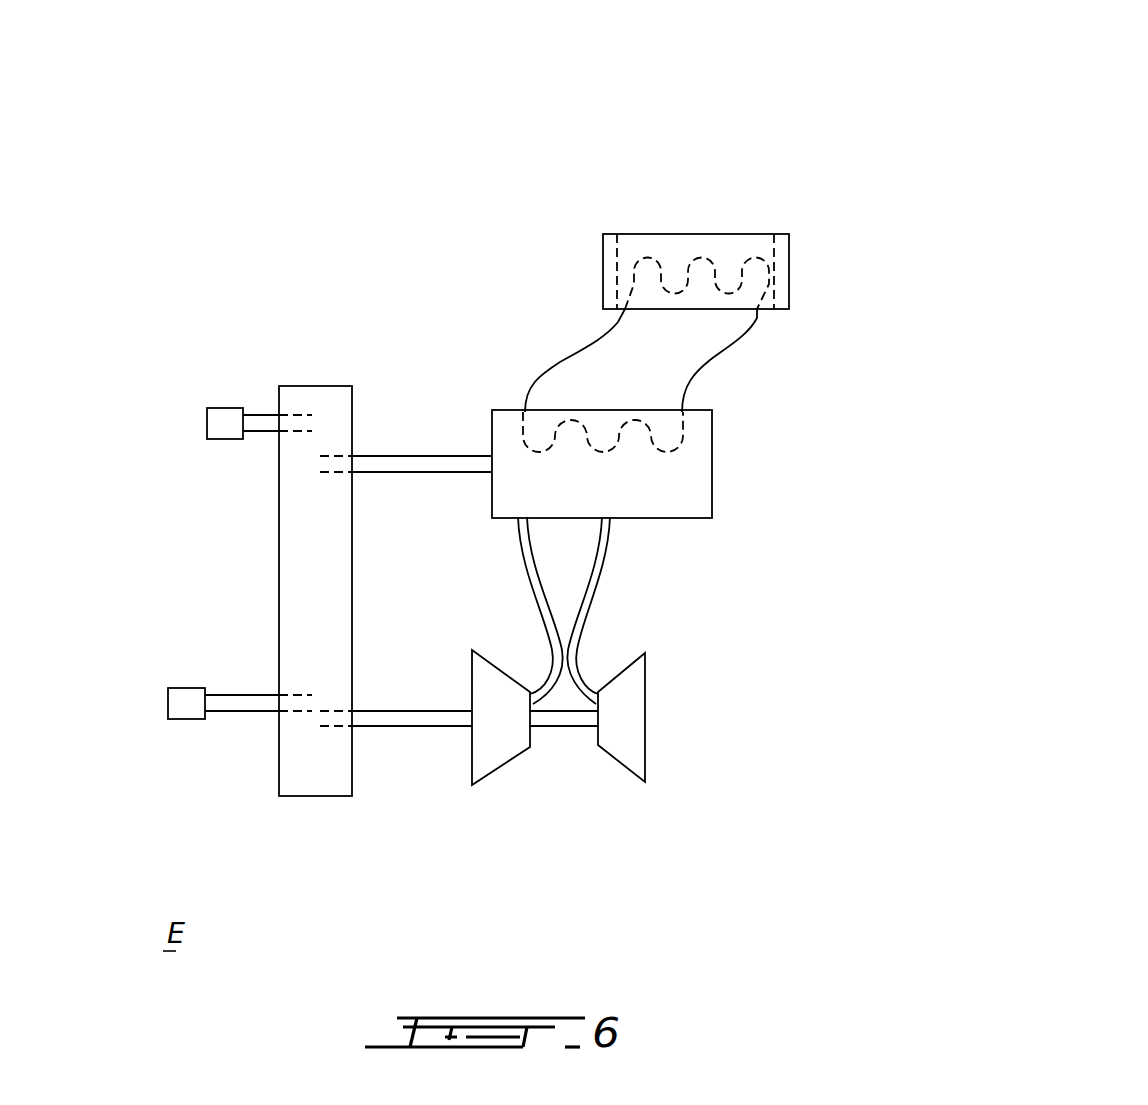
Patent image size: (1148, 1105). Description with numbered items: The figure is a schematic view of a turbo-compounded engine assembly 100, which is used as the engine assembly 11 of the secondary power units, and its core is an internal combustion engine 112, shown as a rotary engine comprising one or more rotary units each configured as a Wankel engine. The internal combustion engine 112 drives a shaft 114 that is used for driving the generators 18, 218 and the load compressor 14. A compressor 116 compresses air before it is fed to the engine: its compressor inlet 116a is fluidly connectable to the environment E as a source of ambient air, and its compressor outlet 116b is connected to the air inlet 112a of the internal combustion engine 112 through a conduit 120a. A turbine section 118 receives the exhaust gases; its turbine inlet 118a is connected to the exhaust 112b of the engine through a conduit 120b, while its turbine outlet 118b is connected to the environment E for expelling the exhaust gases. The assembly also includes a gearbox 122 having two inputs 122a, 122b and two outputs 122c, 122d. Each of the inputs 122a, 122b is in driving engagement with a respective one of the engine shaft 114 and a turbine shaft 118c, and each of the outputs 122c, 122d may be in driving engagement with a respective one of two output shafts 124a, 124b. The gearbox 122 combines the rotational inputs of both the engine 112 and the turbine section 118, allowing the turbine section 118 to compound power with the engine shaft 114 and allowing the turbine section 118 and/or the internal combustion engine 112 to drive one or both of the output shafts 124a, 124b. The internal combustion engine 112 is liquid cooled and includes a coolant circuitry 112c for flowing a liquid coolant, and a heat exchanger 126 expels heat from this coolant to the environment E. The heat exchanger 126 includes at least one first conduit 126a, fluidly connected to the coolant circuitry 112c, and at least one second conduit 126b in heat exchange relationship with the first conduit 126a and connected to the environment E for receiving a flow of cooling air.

The engine assembly 100 is at (885, 93).
The engine assembly 11 is at (810, 167).
The internal combustion engine 112 is at (608, 494).
The air inlet 112a is at (505, 525).
The exhaust 112b is at (625, 527).
The coolant circuitry 112c is at (680, 448).
The shaft 114 is at (424, 455).
The compressor 116 is at (517, 748).
The compressor inlet 116a is at (473, 767).
The compressor outlet 116b is at (518, 703).
The turbine section 118 is at (619, 763).
The turbine inlet 118a is at (598, 670).
The turbine outlet 118b is at (654, 764).
The turbine shaft 118c is at (578, 727).
The conduit 120a is at (522, 582).
The conduit 120b is at (609, 575).
The gearbox 122 is at (279, 535).
The input 122a is at (355, 448).
The input 122b is at (360, 704).
The output 122c is at (272, 441).
The output 122d is at (272, 718).
The output shaft 124a is at (262, 413).
The output shaft 124b is at (242, 695).
The heat exchanger 126 is at (800, 257).
The first conduit 126a is at (707, 257).
The second conduit 126b is at (619, 257).
The generator 18 is at (151, 423).
The generator 218 is at (207, 420).
The load compressor 14 is at (168, 698).